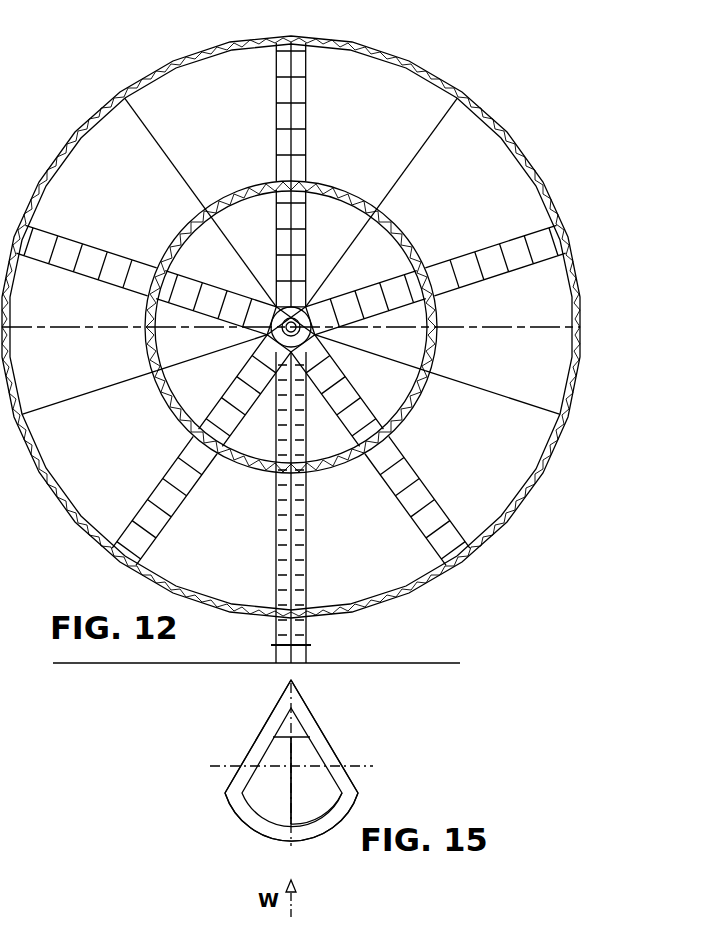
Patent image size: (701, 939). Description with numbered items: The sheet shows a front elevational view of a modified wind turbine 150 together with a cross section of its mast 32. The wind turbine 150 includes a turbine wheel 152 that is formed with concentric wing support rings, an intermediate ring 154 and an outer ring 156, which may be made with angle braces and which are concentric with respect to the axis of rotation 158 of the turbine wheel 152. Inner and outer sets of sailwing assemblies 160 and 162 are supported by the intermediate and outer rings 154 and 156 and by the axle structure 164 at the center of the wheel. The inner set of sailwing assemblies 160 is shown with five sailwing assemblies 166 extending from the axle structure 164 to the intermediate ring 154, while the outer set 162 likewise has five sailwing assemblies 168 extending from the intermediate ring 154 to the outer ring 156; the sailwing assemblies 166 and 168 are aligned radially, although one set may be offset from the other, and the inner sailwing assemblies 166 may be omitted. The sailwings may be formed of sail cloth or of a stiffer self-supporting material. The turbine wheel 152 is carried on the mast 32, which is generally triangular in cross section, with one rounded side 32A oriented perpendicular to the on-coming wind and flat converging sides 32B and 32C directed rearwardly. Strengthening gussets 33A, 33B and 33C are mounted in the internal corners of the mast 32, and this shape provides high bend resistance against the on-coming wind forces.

In FIG. 12, the wind turbine 150 is at (520, 79).
In FIG. 12, the turbine wheel 152 is at (377, 45).
In FIG. 12, the intermediate ring 154 is at (341, 190).
In FIG. 12, the outer ring 156 is at (544, 181).
In FIG. 12, the axis of rotation 158 is at (264, 330).
In FIG. 12, the inner set of sailwing assemblies 160 is at (352, 362).
In FIG. 12, the outer set of sailwing assemblies 162 is at (416, 447).
In FIG. 12, the axle structure 164 is at (309, 300).
In FIG. 12, the sailwing assembly 166 is at (283, 222).
In FIG. 12, the sailwing assembly 168 is at (283, 137).
In FIG. 12, the mast 32 is at (305, 517).
In FIG. 15, the mast 32 is at (236, 745).
In FIG. 15, the rounded side 32A is at (256, 824).
In FIG. 15, the flat converging side 32B is at (268, 724).
In FIG. 15, the flat converging side 32C is at (322, 733).
In FIG. 15, the strengthening gusset 33A is at (251, 803).
In FIG. 15, the strengthening gusset 33B is at (330, 803).
In FIG. 15, the strengthening gusset 33C is at (293, 728).